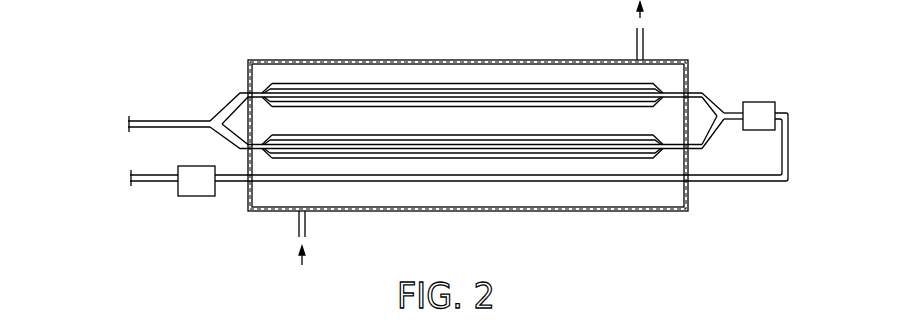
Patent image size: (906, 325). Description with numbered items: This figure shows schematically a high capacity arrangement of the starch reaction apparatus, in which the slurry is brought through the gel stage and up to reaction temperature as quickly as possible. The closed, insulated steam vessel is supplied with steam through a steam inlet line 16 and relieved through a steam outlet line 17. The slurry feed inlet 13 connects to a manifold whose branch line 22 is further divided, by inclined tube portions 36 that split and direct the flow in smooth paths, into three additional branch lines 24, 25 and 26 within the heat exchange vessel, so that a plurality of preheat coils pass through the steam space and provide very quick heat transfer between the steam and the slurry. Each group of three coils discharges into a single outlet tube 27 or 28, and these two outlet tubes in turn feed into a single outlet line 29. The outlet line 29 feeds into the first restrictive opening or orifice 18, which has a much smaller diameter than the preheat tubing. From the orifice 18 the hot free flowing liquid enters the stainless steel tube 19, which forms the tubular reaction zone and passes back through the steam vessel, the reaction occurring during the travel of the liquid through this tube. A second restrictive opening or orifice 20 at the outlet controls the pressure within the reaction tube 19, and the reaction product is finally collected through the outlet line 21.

The slurry feed inlet 13 is at (154, 119).
The branch line 22 is at (230, 101).
The inclined tube portions 36 is at (265, 87).
The branch line 24 is at (336, 83).
The branch line 25 is at (386, 97).
The branch line 26 is at (438, 106).
The outlet tube 27 is at (714, 95).
The outlet tube 28 is at (709, 133).
The outlet line 29 is at (731, 108).
The first restrictive opening or orifice 18 is at (766, 131).
The stainless steel tube 19 is at (742, 183).
The second restrictive opening or orifice 20 is at (197, 197).
The outlet line 21 is at (158, 184).
The steam outlet line 17 is at (643, 42).
The steam inlet line 16 is at (306, 236).